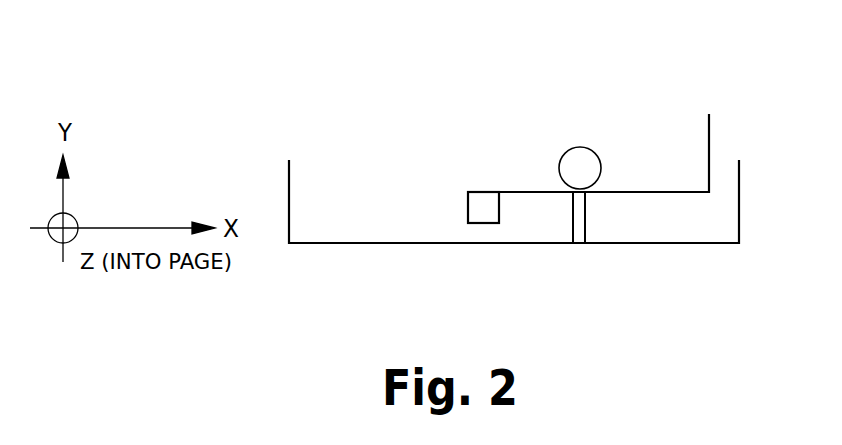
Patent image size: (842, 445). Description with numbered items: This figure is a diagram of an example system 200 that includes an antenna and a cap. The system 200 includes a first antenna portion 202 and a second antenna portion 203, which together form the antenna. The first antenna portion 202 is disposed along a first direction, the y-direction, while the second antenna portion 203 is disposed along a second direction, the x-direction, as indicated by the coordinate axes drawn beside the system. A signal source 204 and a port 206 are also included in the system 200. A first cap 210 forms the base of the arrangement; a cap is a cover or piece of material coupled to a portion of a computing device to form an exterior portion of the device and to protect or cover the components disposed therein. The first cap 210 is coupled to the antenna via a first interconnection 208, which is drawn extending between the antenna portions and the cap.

The system 200 is at (515, 58).
The first antenna portion 202 is at (710, 131).
The second antenna portion 203 is at (657, 190).
The signal source 204 is at (581, 147).
The port 206 is at (487, 191).
The first interconnection 208 is at (586, 220).
The first cap 210 is at (335, 243).